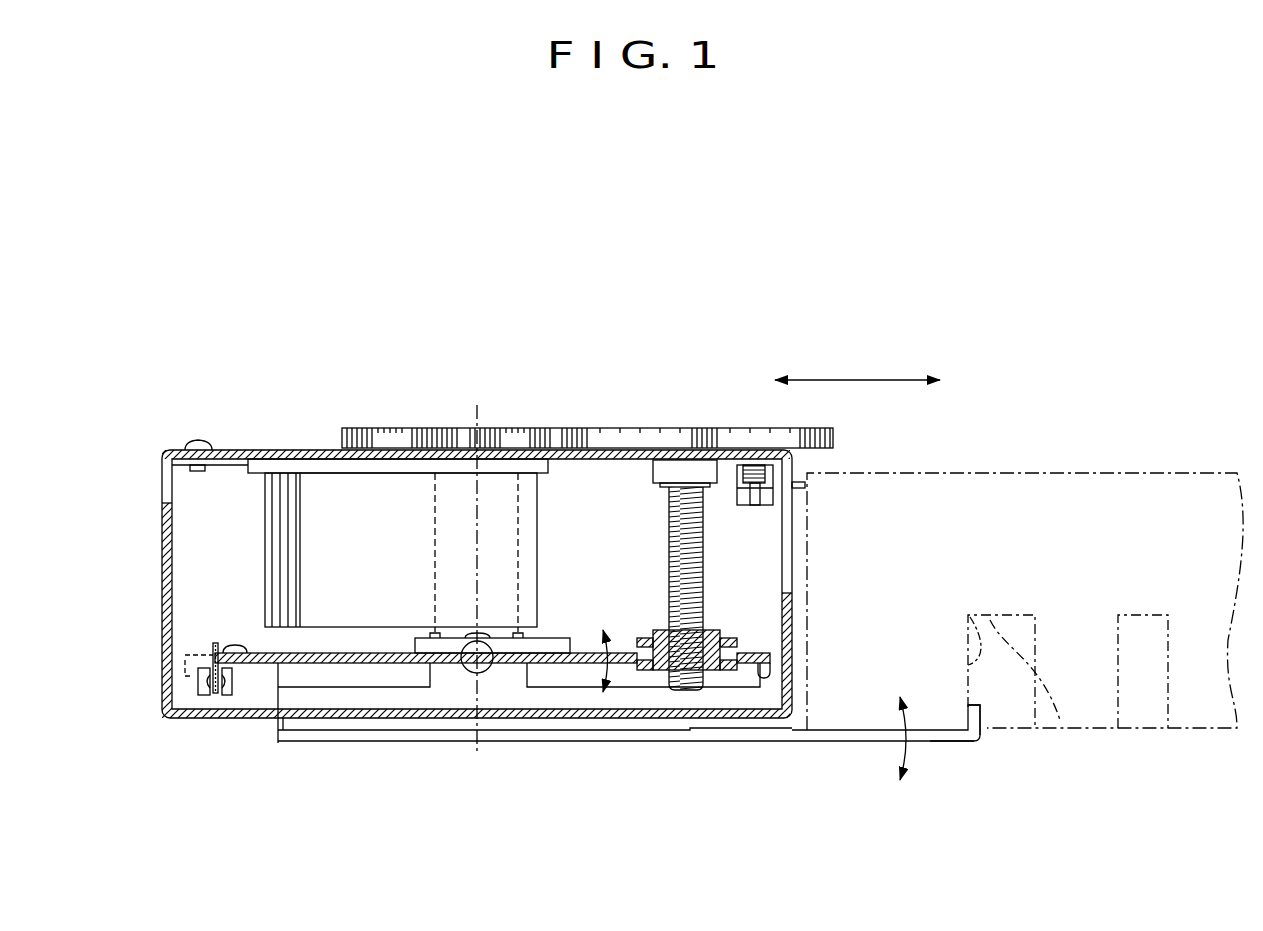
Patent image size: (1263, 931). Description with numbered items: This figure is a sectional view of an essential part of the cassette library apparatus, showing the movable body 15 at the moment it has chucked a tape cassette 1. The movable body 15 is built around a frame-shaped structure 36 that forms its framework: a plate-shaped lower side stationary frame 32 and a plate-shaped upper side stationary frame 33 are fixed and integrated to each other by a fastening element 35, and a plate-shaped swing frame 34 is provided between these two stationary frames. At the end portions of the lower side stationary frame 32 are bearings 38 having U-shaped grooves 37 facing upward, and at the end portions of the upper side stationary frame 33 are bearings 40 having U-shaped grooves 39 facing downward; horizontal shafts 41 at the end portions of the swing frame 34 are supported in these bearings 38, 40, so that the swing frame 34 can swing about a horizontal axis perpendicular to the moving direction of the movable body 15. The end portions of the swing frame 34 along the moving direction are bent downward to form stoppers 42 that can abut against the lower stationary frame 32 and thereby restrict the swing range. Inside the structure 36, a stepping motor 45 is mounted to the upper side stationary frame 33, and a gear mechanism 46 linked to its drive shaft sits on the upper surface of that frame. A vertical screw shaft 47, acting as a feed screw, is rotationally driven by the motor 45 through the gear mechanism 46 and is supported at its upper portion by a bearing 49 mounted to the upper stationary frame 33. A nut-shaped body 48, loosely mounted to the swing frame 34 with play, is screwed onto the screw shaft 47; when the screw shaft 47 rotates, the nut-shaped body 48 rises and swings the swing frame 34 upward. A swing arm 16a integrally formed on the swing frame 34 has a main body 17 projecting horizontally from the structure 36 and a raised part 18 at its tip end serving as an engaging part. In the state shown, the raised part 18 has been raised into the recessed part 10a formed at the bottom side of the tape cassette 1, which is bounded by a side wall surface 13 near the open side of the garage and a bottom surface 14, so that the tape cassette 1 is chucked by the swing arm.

The tape cassette 1 is at (1078, 453).
The recessed part 10a is at (988, 615).
The side wall surface 13 is at (968, 615).
The bottom surface 14 is at (1060, 720).
The movable body 15 is at (389, 383).
The swing arm 16a is at (838, 750).
The main body 17 is at (935, 742).
The raised part 18 is at (983, 711).
The lower side stationary frame 32 is at (241, 720).
The upper side stationary frame 33 is at (262, 449).
The swing frame 34 is at (323, 652).
The fastening element 35 is at (197, 441).
The frame-shaped structure 36 is at (156, 650).
The U-shaped groove 37 is at (466, 661).
The bearing 38 is at (437, 670).
The U-shaped groove 39 is at (487, 673).
The bearing 40 is at (520, 526).
The shaft 41 is at (477, 676).
The stopper 42 is at (162, 678).
The stepping motor 45 is at (400, 490).
The gear mechanism 46 is at (619, 413).
The screw shaft 47 is at (665, 568).
The nut-shaped body 48 is at (660, 692).
The bearing 49 is at (683, 470).